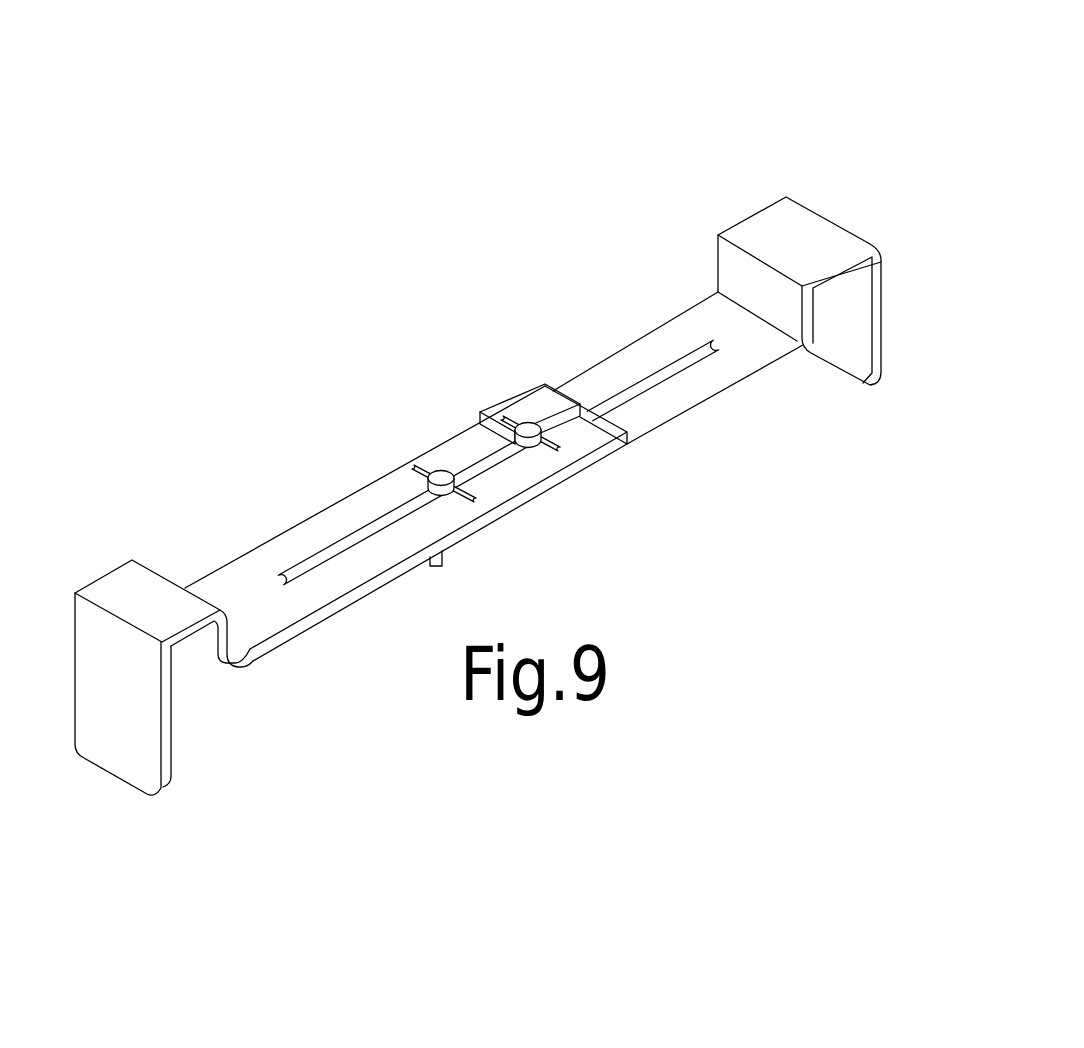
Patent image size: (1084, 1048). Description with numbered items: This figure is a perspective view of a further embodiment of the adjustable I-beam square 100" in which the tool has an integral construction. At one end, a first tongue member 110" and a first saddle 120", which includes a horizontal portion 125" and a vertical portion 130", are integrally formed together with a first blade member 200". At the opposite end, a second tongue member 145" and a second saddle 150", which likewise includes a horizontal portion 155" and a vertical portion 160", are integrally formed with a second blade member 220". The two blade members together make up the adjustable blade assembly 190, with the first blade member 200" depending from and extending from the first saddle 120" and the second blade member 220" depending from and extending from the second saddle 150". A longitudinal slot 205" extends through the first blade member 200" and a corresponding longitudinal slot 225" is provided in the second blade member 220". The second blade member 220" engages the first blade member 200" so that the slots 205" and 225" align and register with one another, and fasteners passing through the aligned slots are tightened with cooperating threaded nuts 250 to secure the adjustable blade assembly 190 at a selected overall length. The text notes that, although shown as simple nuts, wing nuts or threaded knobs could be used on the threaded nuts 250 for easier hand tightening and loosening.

The adjustable I-beam square 100 is at (503, 511).
The first tongue member 110 is at (110, 728).
The first saddle 120 is at (220, 674).
The horizontal portion 125 is at (150, 593).
The vertical portion 130 is at (222, 643).
The second tongue member 145 is at (880, 327).
The second saddle 150 is at (826, 236).
The horizontal portion 155 is at (802, 243).
The vertical portion 160 is at (808, 317).
The adjustable blade assembly 190 is at (514, 376).
The first blade member 200 is at (406, 532).
The longitudinal slot 205 is at (335, 548).
The second blade member 220 is at (616, 392).
The longitudinal slot 225 is at (628, 393).
The threaded nuts 250 is at (527, 427).